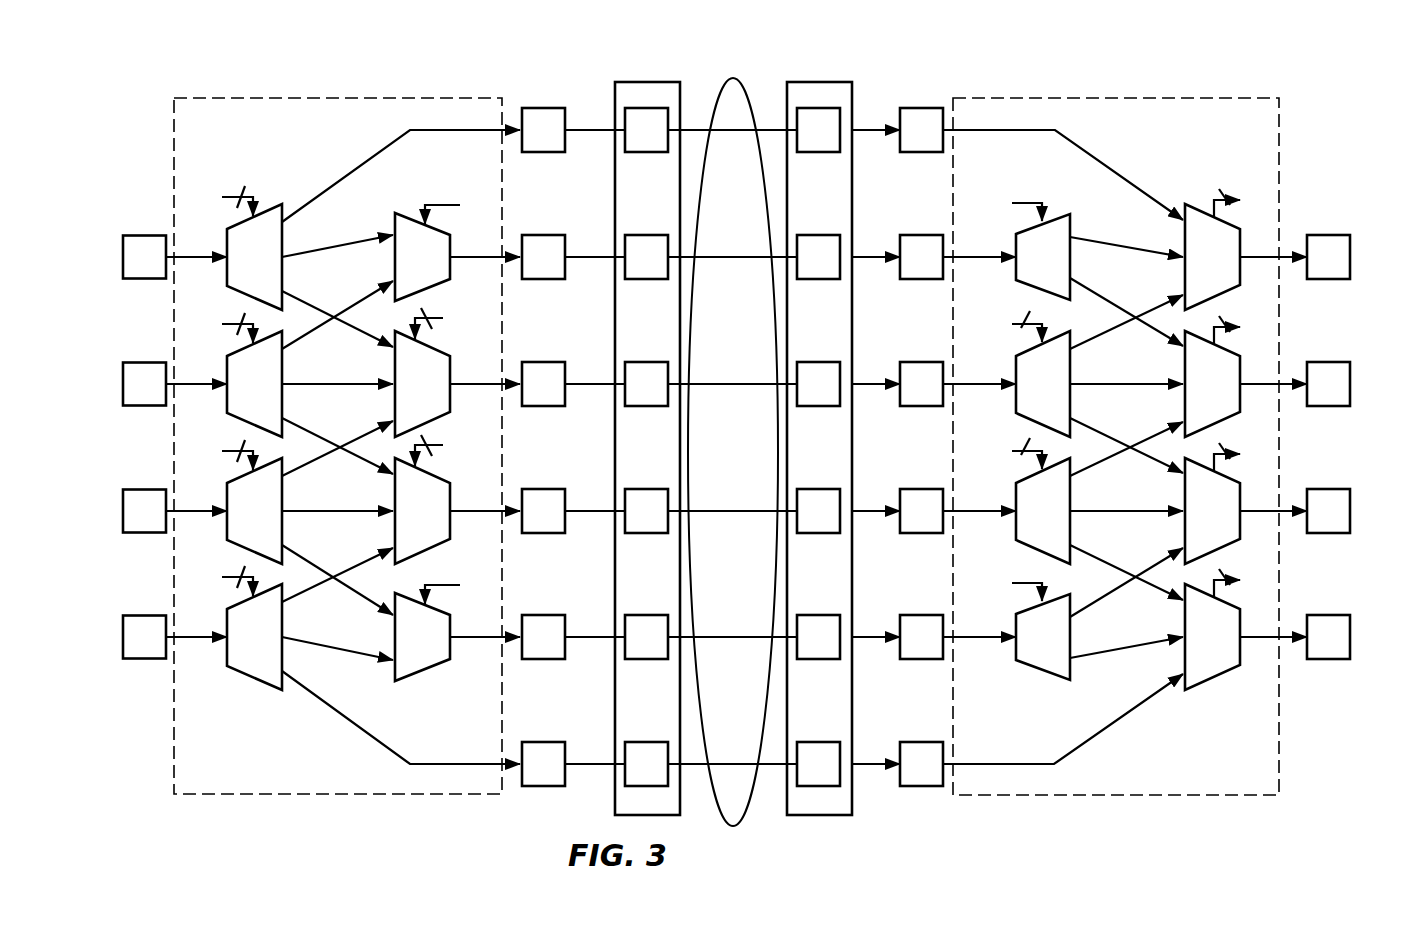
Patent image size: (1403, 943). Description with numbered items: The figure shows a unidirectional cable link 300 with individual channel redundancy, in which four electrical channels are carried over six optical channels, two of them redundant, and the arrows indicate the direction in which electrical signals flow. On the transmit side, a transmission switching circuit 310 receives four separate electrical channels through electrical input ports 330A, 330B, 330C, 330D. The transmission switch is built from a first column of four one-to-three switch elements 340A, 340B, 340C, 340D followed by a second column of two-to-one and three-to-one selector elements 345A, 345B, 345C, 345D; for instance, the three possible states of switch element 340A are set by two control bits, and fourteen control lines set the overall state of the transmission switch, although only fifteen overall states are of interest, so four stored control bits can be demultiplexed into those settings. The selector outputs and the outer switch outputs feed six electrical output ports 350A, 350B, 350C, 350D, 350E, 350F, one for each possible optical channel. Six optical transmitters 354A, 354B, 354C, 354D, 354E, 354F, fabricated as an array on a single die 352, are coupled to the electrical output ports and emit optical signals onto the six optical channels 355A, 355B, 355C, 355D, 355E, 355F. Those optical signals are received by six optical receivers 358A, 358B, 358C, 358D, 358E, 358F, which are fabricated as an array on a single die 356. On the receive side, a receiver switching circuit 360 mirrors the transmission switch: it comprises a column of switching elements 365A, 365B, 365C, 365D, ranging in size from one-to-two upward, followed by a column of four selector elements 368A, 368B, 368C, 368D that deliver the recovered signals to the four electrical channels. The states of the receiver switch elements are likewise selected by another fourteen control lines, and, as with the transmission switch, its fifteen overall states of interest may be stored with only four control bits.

The unidirectional cable link 300 is at (262, 65).
The transmission switching circuit 310 is at (196, 115).
The electrical input port 330A is at (143, 235).
The electrical input port 330B is at (143, 362).
The electrical input port 330C is at (143, 489).
The electrical input port 330D is at (143, 615).
The 1:3 switch element 340A is at (238, 240).
The 1:3 switch element 340B is at (238, 367).
The 1:3 switch element 340C is at (238, 494).
The 1:3 switch element 340D is at (238, 620).
The 2:1 selector element 345A is at (438, 242).
The 3:1 selector element 345B is at (438, 368).
The 3:1 selector element 345C is at (438, 495).
The 2:1 selector element 345D is at (438, 622).
The electrical output port 350A is at (544, 108).
The electrical output port 350B is at (544, 235).
The electrical output port 350C is at (544, 362).
The electrical output port 350D is at (544, 489).
The electrical output port 350E is at (544, 615).
The electrical output port 350F is at (544, 742).
The single die 352 is at (662, 82).
The optical transmitter 354A is at (650, 108).
The optical transmitter 354B is at (650, 235).
The optical transmitter 354C is at (650, 362).
The optical transmitter 354D is at (650, 489).
The optical transmitter 354E is at (650, 615).
The optical transmitter 354F is at (650, 742).
The optical channel 355A is at (733, 133).
The optical channel 355B is at (733, 255).
The optical channel 355C is at (733, 382).
The optical channel 355D is at (733, 509).
The optical channel 355E is at (733, 635).
The optical channel 355F is at (733, 762).
The single die 356 is at (830, 82).
The optical receiver 358A is at (820, 108).
The optical receiver 358B is at (820, 235).
The optical receiver 358C is at (820, 362).
The optical receiver 358D is at (820, 489).
The optical receiver 358E is at (820, 615).
The optical receiver 358F is at (820, 742).
The receiver switching circuit 360 is at (1110, 105).
The switching element 365A is at (1018, 242).
The switching element 365B is at (1018, 369).
The switching element 365C is at (1018, 496).
The switching element 365D is at (1018, 622).
The selector element 368A is at (1240, 235).
The selector element 368B is at (1240, 362).
The selector element 368C is at (1240, 489).
The selector element 368D is at (1240, 615).